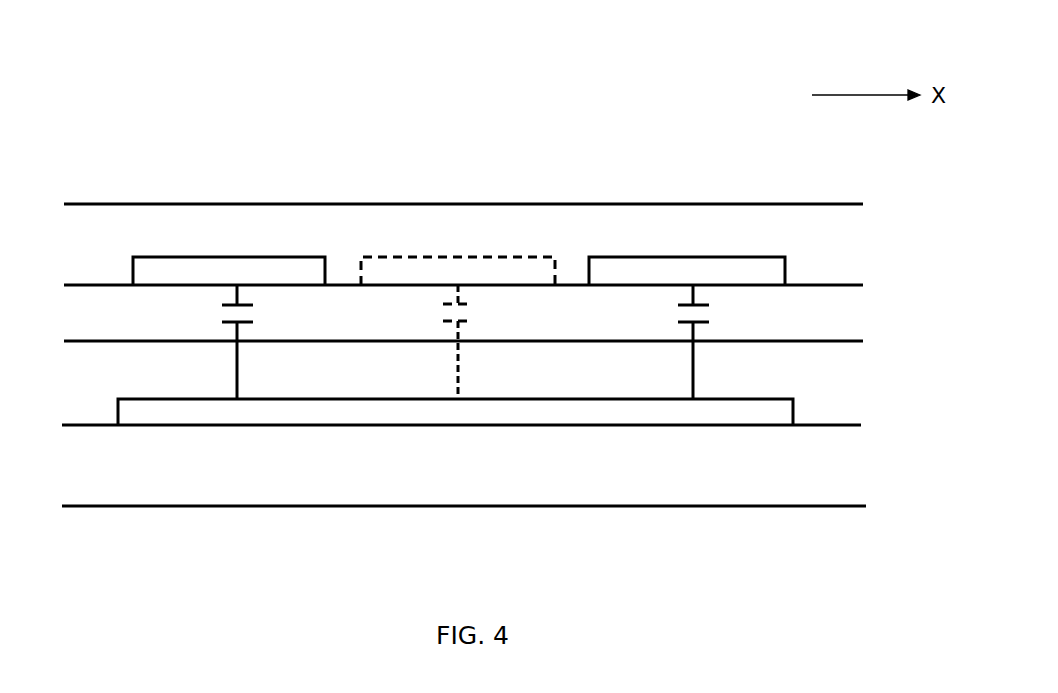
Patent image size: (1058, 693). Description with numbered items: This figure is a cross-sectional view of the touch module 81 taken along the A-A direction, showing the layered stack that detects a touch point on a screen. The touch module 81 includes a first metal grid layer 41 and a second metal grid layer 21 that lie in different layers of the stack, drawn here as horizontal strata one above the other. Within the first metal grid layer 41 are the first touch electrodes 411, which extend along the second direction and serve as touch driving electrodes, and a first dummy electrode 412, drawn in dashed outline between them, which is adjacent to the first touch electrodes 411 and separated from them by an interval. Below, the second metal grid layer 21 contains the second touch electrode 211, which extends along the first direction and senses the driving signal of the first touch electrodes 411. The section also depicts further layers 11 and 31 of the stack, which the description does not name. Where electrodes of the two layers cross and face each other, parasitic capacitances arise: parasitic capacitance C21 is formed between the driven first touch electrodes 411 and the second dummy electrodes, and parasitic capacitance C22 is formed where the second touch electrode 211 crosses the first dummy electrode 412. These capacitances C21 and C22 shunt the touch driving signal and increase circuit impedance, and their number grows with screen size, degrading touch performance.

The touch module 81 is at (173, 94).
The substrate 11 is at (825, 480).
The second metal grid layer 21 is at (826, 398).
The second touch electrode 211 is at (328, 407).
The insulating layer 31 is at (838, 325).
The first metal grid layer 41 is at (826, 248).
The first touch electrode 411 is at (223, 280).
The first dummy electrode 412 is at (442, 278).
The parasitic capacitance C21 is at (483, 342).
The parasitic capacitance C22 is at (490, 342).